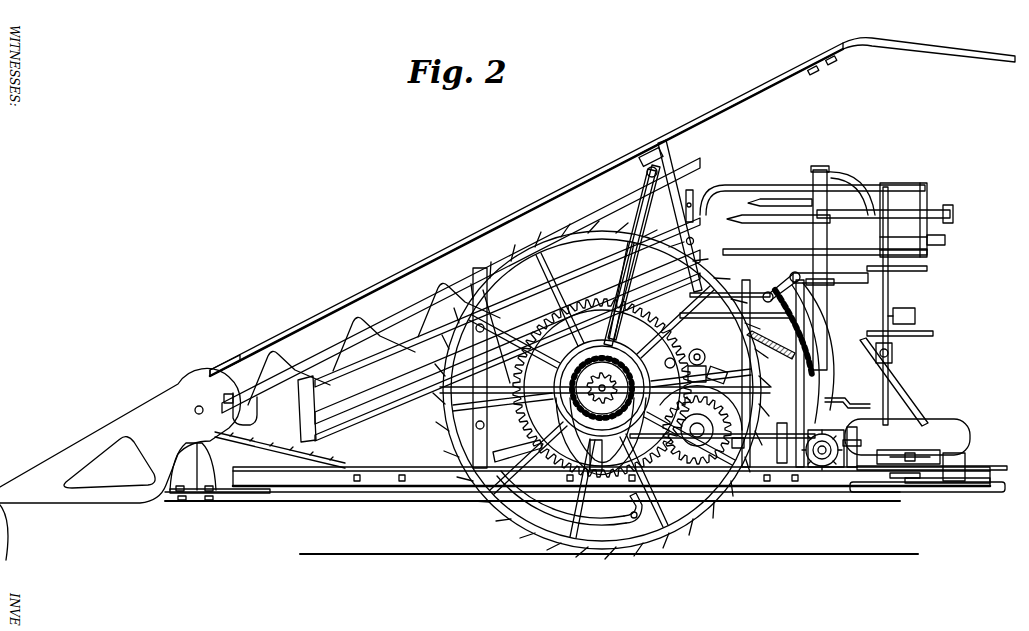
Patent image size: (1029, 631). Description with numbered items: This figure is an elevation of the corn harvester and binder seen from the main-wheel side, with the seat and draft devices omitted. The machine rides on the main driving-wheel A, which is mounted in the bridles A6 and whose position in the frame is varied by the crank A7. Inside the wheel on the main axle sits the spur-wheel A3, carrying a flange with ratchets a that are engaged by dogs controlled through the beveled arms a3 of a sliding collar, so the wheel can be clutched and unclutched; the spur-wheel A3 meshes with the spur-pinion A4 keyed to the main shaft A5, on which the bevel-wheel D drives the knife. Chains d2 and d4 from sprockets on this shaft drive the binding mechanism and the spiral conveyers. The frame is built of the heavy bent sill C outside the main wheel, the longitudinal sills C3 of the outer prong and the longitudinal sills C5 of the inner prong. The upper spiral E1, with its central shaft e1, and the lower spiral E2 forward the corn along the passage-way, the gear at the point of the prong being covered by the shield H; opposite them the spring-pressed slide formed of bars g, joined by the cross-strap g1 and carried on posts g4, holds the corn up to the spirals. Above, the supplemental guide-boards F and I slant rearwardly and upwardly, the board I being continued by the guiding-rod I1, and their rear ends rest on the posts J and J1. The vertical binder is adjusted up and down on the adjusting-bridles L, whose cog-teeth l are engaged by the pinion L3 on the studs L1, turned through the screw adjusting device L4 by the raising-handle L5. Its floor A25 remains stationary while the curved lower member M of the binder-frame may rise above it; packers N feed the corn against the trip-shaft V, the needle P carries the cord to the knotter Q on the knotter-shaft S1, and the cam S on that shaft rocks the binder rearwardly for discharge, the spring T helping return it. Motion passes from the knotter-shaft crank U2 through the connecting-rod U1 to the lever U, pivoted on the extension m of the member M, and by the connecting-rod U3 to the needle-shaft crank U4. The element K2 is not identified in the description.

The supplemental guiding-board I is at (422, 267).
The supplemental guiding-rod I1 is at (932, 53).
The supplemental guide-board F is at (216, 372).
The central shaft e1 is at (247, 392).
The spiral E1 is at (288, 366).
The shield H is at (120, 435).
The cross-strap g1 is at (301, 417).
The chain d4 is at (312, 464).
The main sill C is at (403, 476).
The longitudinal sills of inner gathering-prong C5 is at (198, 500).
The longitudinal sills of outer gathering-prong C3 is at (304, 497).
The raising-handle L5 is at (480, 278).
The bars g is at (510, 383).
The ratchets a is at (630, 276).
The beveled arms a3 is at (598, 346).
The spur-wheel A3 is at (572, 352).
The chain d2 is at (697, 349).
The main driving-wheel A is at (510, 510).
The bridles A6 is at (597, 508).
The spur-pinion A4 is at (708, 440).
The main shaft A5 is at (740, 448).
The studs L1 is at (822, 468).
The pinion L3 is at (828, 462).
The adjusting device L4 is at (856, 470).
The crank of knotter-shaft U2 is at (859, 487).
The crank of needle-shaft U4 is at (898, 478).
The adjustable connecting-rod U1 is at (934, 493).
The connecting-rod U3 is at (967, 484).
The lever U is at (1000, 480).
The lower horizontal member of binder-frame M is at (958, 440).
The extension m is at (943, 457).
The crank A7 is at (866, 403).
The floor A25 is at (948, 413).
The bevel-wheel D is at (722, 410).
The lower spiral E2 is at (512, 445).
The post J is at (668, 158).
The post J1 is at (646, 174).
The curved guide K2 is at (755, 196).
The knotter-shaft S1 is at (827, 170).
The knotter Q is at (845, 210).
The needle P is at (928, 224).
The packers N is at (931, 240).
The cam S is at (868, 278).
The trip-shaft V is at (889, 294).
The adjusting-bridles L is at (767, 292).
The spring T is at (787, 357).
The cog-teeth l is at (813, 348).
The posts g4 is at (693, 245).